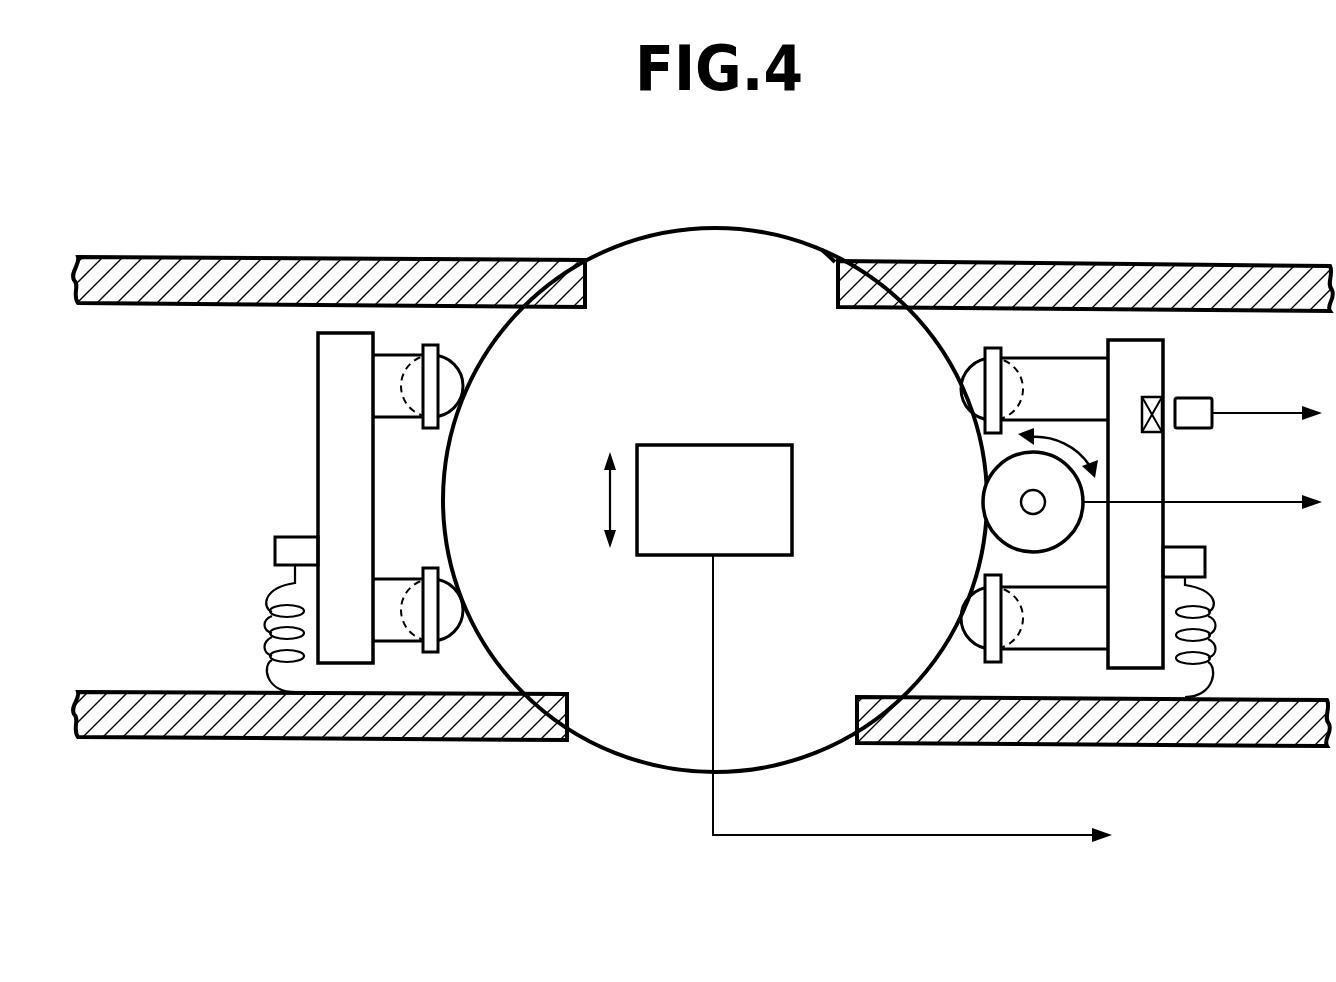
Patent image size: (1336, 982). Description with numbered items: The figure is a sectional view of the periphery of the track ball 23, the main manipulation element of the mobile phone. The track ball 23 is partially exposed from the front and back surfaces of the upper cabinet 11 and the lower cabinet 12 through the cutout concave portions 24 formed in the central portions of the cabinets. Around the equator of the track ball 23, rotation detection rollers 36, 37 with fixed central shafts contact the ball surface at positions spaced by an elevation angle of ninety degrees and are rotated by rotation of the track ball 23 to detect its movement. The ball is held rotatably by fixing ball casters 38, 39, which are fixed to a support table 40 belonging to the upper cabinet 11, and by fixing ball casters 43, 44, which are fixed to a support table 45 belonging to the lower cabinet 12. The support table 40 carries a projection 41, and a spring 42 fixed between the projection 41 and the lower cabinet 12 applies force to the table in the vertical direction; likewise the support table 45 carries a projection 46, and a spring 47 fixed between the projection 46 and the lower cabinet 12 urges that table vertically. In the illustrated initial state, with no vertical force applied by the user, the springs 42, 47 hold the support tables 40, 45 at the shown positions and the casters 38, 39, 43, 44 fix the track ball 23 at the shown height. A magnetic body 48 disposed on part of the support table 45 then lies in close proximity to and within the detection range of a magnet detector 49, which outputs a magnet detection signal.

The upper cabinet 11 is at (294, 258).
The lower cabinet 12 is at (1183, 268).
The track ball 23 is at (712, 228).
The cutout concave portion 24 is at (838, 268).
The rotation detection roller 36 is at (985, 498).
The rotation detection roller 37 is at (722, 460).
The fixing ball caster 38 is at (430, 416).
The fixing ball caster 39 is at (430, 578).
The support table 40 is at (318, 386).
The projection 41 is at (275, 547).
The spring 42 is at (270, 620).
The fixing ball caster 43 is at (990, 348).
The fixing ball caster 44 is at (1000, 662).
The support table 45 is at (1150, 472).
The projection 46 is at (1207, 558).
The spring 47 is at (1210, 630).
The magnetic body 48 is at (1152, 397).
The magnet detector 49 is at (1212, 428).